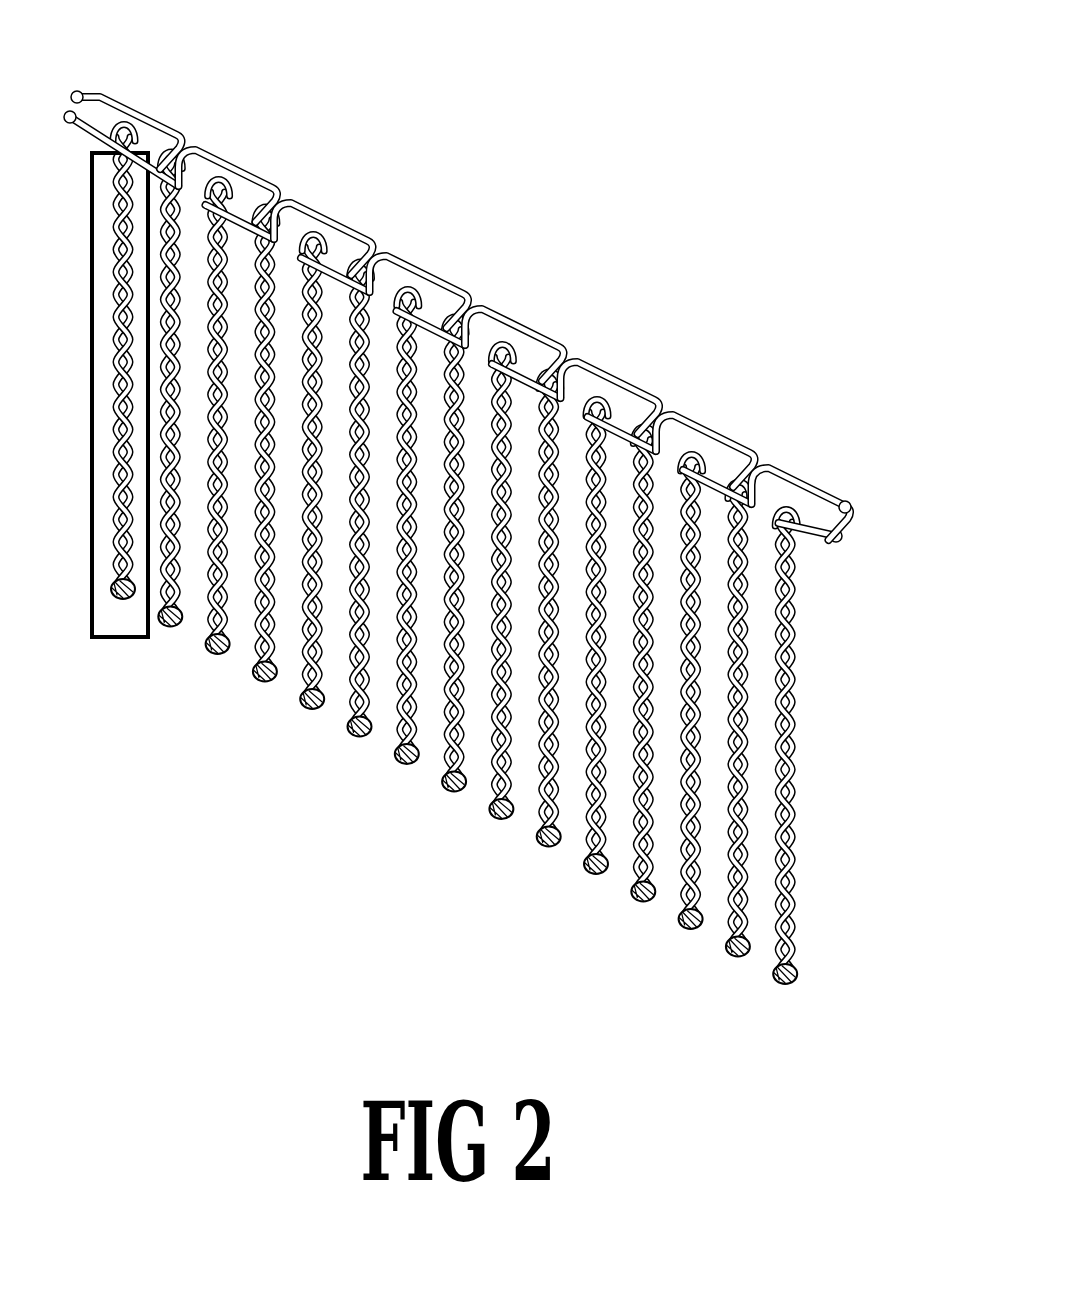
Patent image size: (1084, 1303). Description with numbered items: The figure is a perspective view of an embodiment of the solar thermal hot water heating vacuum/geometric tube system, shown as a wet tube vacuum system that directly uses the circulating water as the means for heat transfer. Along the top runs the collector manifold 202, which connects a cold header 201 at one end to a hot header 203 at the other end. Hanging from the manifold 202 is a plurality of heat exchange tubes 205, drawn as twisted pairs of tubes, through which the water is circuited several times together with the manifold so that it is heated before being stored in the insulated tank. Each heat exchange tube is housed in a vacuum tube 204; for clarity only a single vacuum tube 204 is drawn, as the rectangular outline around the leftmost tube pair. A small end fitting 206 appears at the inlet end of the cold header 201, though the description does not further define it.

The cold header 201 is at (90, 92).
The manifold 202 is at (512, 287).
The hot header 203 is at (838, 508).
The vacuum tube 204 is at (85, 641).
The heat exchange tube 205 is at (304, 683).
The header end fitting 206 is at (77, 91).